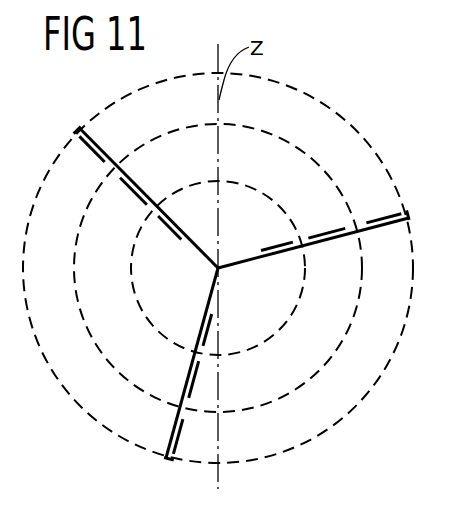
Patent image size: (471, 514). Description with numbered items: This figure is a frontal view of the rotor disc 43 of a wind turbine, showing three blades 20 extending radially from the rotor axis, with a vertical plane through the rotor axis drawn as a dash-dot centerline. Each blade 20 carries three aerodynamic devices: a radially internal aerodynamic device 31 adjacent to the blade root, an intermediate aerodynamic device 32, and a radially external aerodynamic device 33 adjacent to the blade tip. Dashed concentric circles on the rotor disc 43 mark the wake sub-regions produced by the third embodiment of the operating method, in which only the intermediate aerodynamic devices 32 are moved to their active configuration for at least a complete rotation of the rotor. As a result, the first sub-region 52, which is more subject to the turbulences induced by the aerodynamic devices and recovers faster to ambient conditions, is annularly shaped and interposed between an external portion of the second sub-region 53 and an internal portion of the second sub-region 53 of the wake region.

The blade 20 is at (103, 157).
The radially internal aerodynamic device 31 is at (182, 243).
The intermediate aerodynamic device 32 is at (133, 193).
The radially external aerodynamic device 33 is at (96, 156).
The rotor disc 43 is at (367, 137).
The first sub-region 52 is at (257, 135).
The second sub-region 53 is at (328, 121).